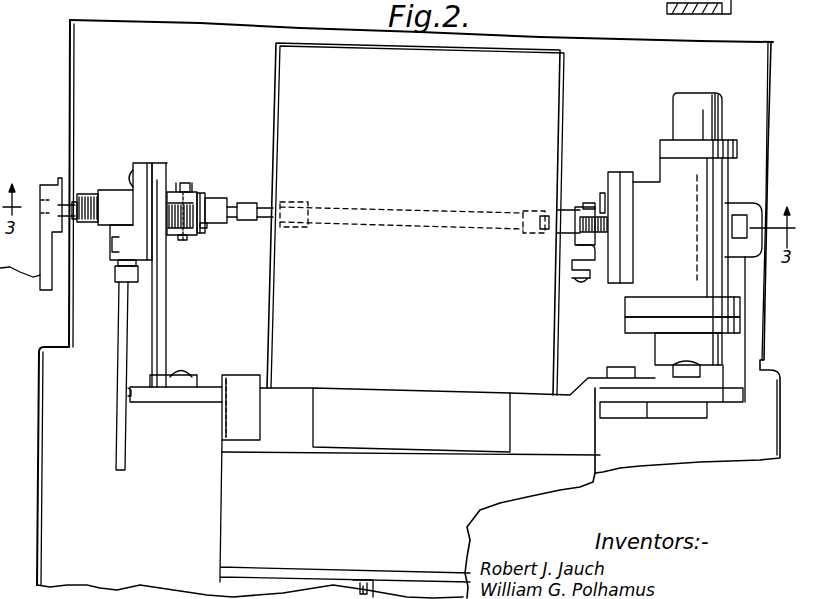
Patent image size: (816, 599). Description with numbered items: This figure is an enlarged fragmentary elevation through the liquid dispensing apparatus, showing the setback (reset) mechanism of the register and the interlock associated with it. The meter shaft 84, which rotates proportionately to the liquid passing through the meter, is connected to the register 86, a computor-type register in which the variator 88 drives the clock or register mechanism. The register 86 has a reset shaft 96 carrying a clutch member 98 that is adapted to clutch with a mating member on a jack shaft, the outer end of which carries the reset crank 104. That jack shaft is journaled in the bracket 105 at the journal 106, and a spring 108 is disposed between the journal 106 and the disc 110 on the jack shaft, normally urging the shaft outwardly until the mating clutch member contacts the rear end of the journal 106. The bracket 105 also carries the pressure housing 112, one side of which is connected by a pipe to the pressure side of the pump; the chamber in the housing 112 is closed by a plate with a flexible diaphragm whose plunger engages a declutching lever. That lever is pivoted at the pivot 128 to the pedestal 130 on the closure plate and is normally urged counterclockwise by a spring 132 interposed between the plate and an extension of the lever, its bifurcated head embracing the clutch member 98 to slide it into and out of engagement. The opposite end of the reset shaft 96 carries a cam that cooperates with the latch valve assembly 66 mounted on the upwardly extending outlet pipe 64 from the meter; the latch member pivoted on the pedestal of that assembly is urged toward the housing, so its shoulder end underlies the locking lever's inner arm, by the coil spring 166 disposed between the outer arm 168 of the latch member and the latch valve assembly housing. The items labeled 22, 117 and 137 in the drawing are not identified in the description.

The frame casing 22 is at (776, 72).
The outlet pipe 64 is at (728, 110).
The latch valve assembly 66 is at (715, 185).
The meter shaft 84 is at (343, 587).
The register 86 is at (281, 86).
The variator 88 is at (222, 496).
The reset shaft 96 is at (265, 200).
The clutch member 98 is at (206, 200).
The reset crank 104 is at (43, 287).
The bracket 105 is at (157, 298).
The journal 106 is at (103, 197).
The spring 108 is at (88, 196).
The disc 110 is at (77, 200).
The pressure housing 112 is at (117, 227).
The rod 117 is at (124, 333).
The pivot 128 is at (188, 191).
The pedestal 130 is at (174, 192).
The spring 132 is at (171, 236).
The pin 137 is at (205, 228).
The coil spring 166 is at (592, 212).
The outer arm 168 is at (543, 252).